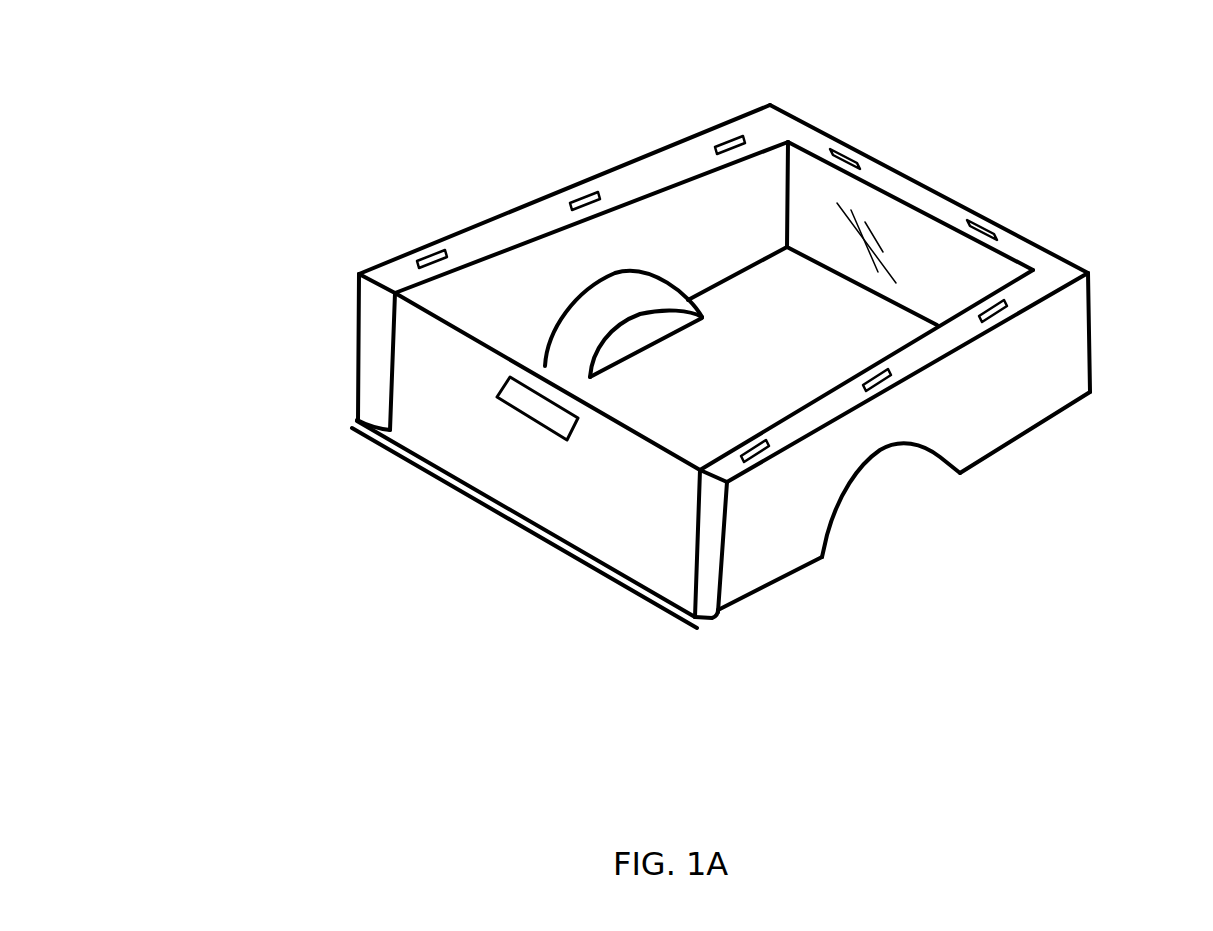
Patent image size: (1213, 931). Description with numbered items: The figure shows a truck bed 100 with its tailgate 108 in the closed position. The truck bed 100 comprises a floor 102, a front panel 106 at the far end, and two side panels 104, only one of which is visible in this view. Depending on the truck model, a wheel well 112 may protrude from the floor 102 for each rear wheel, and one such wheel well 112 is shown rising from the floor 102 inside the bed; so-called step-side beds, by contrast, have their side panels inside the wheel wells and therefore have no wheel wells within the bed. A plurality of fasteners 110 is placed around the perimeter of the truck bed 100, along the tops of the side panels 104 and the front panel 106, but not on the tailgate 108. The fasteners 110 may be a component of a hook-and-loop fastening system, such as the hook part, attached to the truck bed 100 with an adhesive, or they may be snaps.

The truck bed 100 is at (272, 94).
The floor 102 is at (750, 399).
The side panel 104 is at (718, 245).
The front panel 106 is at (962, 281).
The tailgate 108 is at (583, 489).
The fasteners 110 is at (435, 245).
The wheel well 112 is at (604, 302).